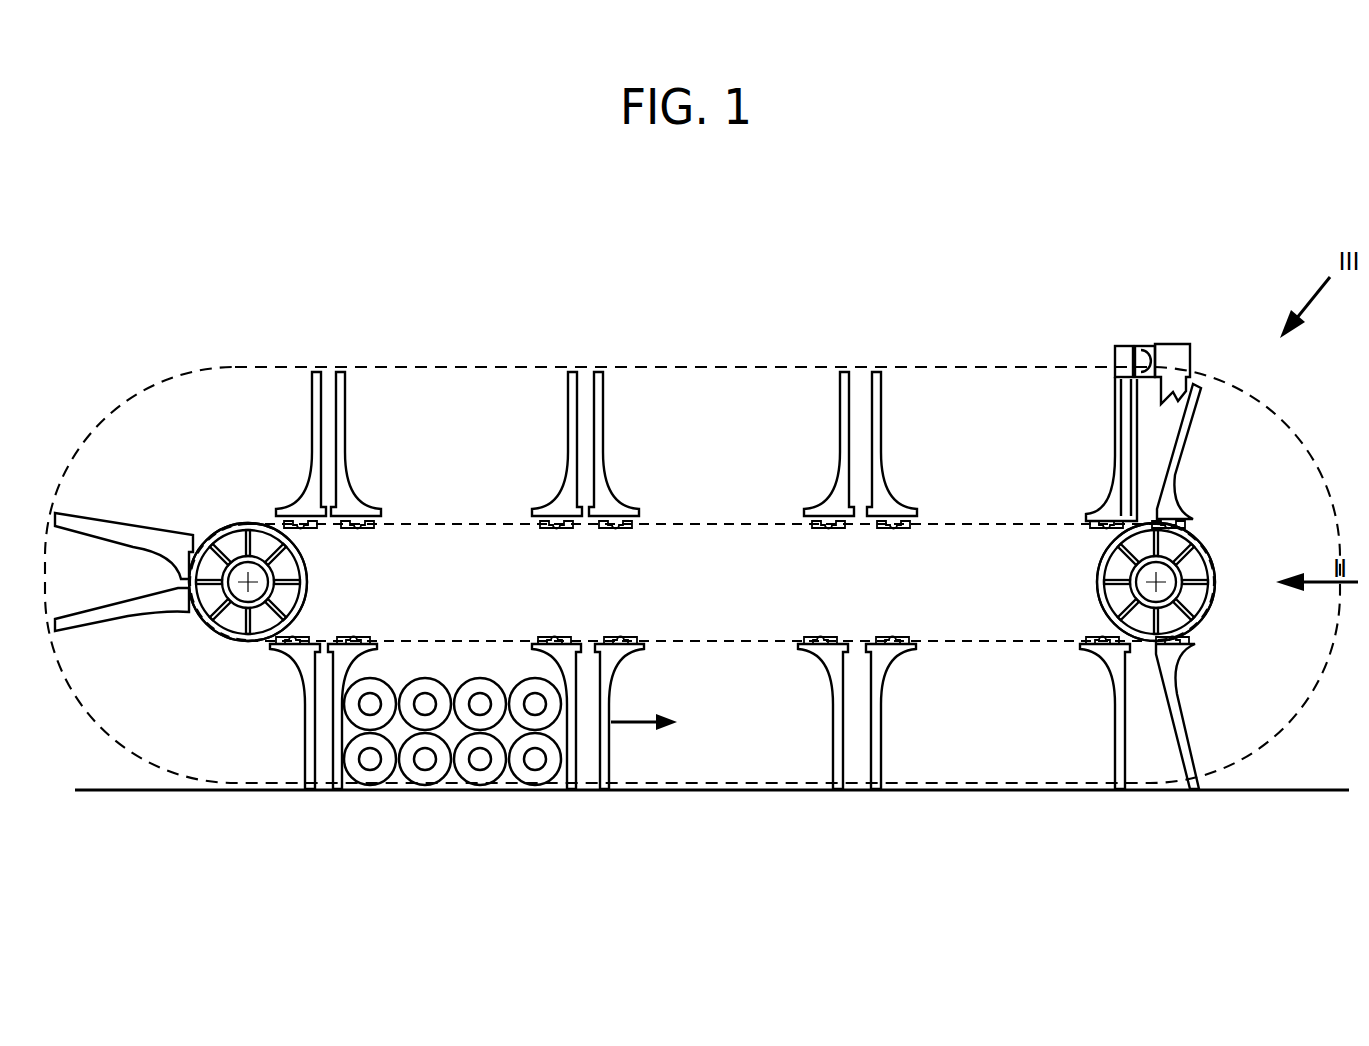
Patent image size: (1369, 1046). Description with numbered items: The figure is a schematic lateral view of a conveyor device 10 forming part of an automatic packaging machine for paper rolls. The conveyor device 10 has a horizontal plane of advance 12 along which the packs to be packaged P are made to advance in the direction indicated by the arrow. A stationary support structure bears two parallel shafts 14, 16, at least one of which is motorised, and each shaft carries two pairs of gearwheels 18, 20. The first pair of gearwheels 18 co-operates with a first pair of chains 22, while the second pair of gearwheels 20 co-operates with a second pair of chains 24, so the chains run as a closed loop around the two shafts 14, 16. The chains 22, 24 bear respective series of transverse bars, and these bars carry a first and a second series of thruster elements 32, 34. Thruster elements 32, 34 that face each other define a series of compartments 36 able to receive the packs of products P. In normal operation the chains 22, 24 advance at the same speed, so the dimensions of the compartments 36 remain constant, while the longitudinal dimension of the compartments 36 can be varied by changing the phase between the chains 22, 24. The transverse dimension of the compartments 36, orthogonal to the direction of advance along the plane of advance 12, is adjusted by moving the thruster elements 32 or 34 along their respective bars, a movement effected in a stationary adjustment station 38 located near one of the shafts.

The conveyor device 10 is at (1098, 291).
The horizontal plane of advance 12 is at (742, 786).
The shaft 14 is at (262, 572).
The shaft 16 is at (1185, 593).
The first pair of gearwheels 18 is at (232, 515).
The second pair of gearwheels 20 is at (1212, 557).
The first pair of chains 22 is at (726, 518).
The second pair of chains 24 is at (702, 582).
The first series of thruster elements 32 is at (309, 432).
The second series of thruster elements 34 is at (342, 437).
The compartments 36 is at (447, 657).
The stationary adjustment station 38 is at (1165, 314).
The packs to be packaged P is at (494, 668).